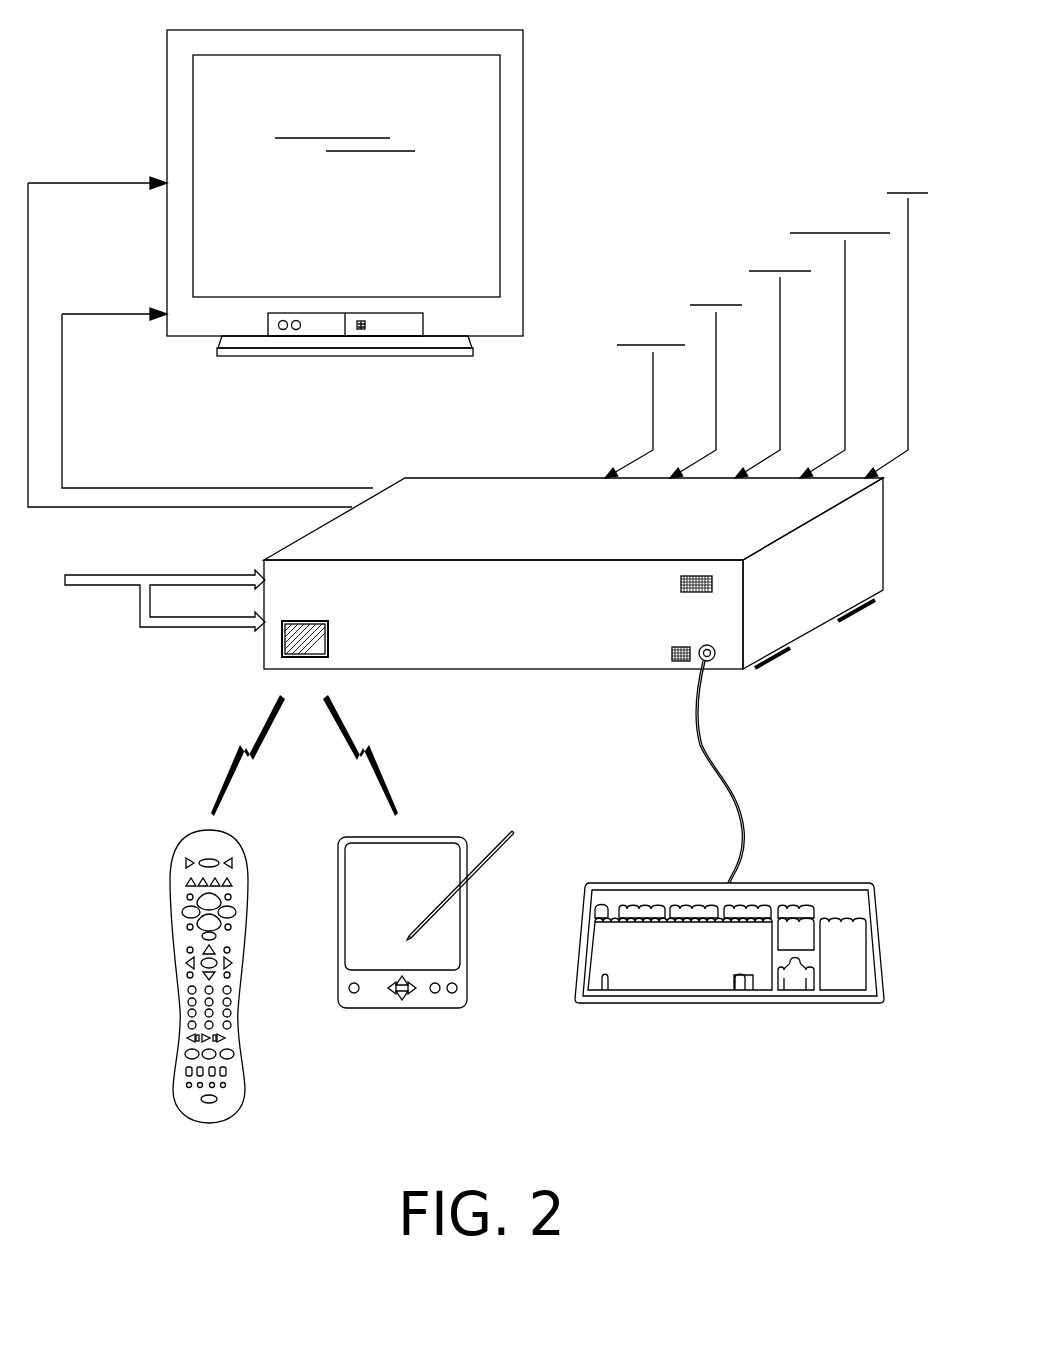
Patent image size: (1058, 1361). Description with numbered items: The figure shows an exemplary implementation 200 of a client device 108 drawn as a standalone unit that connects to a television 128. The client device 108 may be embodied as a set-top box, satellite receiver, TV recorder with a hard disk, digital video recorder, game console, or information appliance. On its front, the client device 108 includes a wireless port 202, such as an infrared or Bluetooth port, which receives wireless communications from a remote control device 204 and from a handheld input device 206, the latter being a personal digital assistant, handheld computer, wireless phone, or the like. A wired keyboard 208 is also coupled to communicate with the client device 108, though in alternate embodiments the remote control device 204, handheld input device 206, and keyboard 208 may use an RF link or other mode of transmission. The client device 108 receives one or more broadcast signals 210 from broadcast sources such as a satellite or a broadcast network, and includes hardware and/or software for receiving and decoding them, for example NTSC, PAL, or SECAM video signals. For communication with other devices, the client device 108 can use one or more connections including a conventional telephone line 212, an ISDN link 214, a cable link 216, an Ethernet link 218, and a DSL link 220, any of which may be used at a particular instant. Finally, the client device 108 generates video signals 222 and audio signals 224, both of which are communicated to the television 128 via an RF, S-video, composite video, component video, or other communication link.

The exemplary implementation 200 is at (664, 56).
The television 128 is at (465, 283).
The client device 108 is at (473, 478).
The wireless port 202 is at (318, 620).
The remote control device 204 is at (173, 862).
The handheld input device 206 is at (422, 833).
The wired keyboard 208 is at (780, 883).
The broadcast signals 210 is at (125, 588).
The conventional telephone line 212 is at (652, 302).
The ISDN link 214 is at (717, 262).
The cable link 216 is at (780, 228).
The Ethernet link 218 is at (840, 190).
The DSL link 220 is at (907, 150).
The video signal(s) 222 is at (122, 218).
The audio signal(s) 224 is at (122, 353).